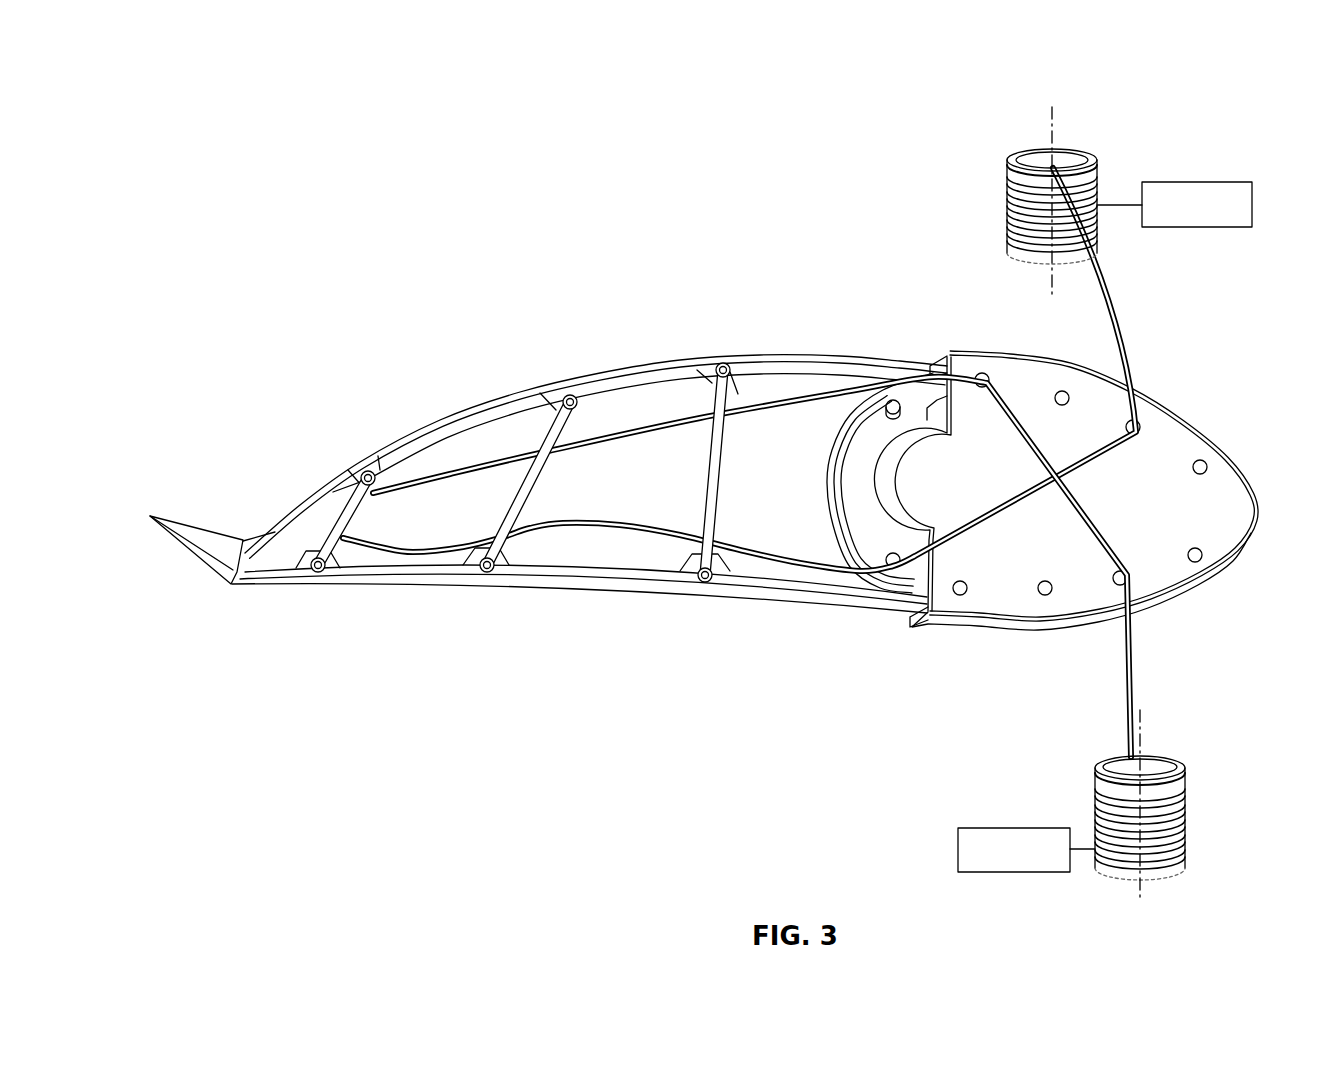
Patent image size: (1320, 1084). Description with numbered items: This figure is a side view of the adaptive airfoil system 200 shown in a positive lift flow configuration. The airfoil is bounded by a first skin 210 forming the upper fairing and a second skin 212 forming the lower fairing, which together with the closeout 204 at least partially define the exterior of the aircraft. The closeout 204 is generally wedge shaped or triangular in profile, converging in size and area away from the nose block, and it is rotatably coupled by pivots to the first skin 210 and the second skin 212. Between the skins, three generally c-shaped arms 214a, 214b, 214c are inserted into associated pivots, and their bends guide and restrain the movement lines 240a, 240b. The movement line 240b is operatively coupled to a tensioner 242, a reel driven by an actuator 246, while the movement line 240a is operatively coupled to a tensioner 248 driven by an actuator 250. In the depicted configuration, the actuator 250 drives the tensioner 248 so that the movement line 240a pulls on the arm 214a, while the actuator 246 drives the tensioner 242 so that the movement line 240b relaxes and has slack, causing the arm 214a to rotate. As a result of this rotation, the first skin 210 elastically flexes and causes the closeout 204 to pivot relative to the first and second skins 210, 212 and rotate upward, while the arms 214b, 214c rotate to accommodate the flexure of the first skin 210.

The adaptive airfoil system 200 is at (1152, 118).
The closeout 204 is at (213, 546).
The first skin 210 is at (613, 370).
The second skin 212 is at (609, 584).
The arm 214a is at (350, 537).
The arm 214b is at (535, 445).
The arm 214c is at (740, 440).
The movement line 240a is at (1010, 392).
The movement line 240b is at (826, 570).
The tensioner 242 is at (1007, 183).
The actuator 246 is at (1170, 182).
The tensioner 248 is at (1160, 755).
The actuator 250 is at (1008, 873).